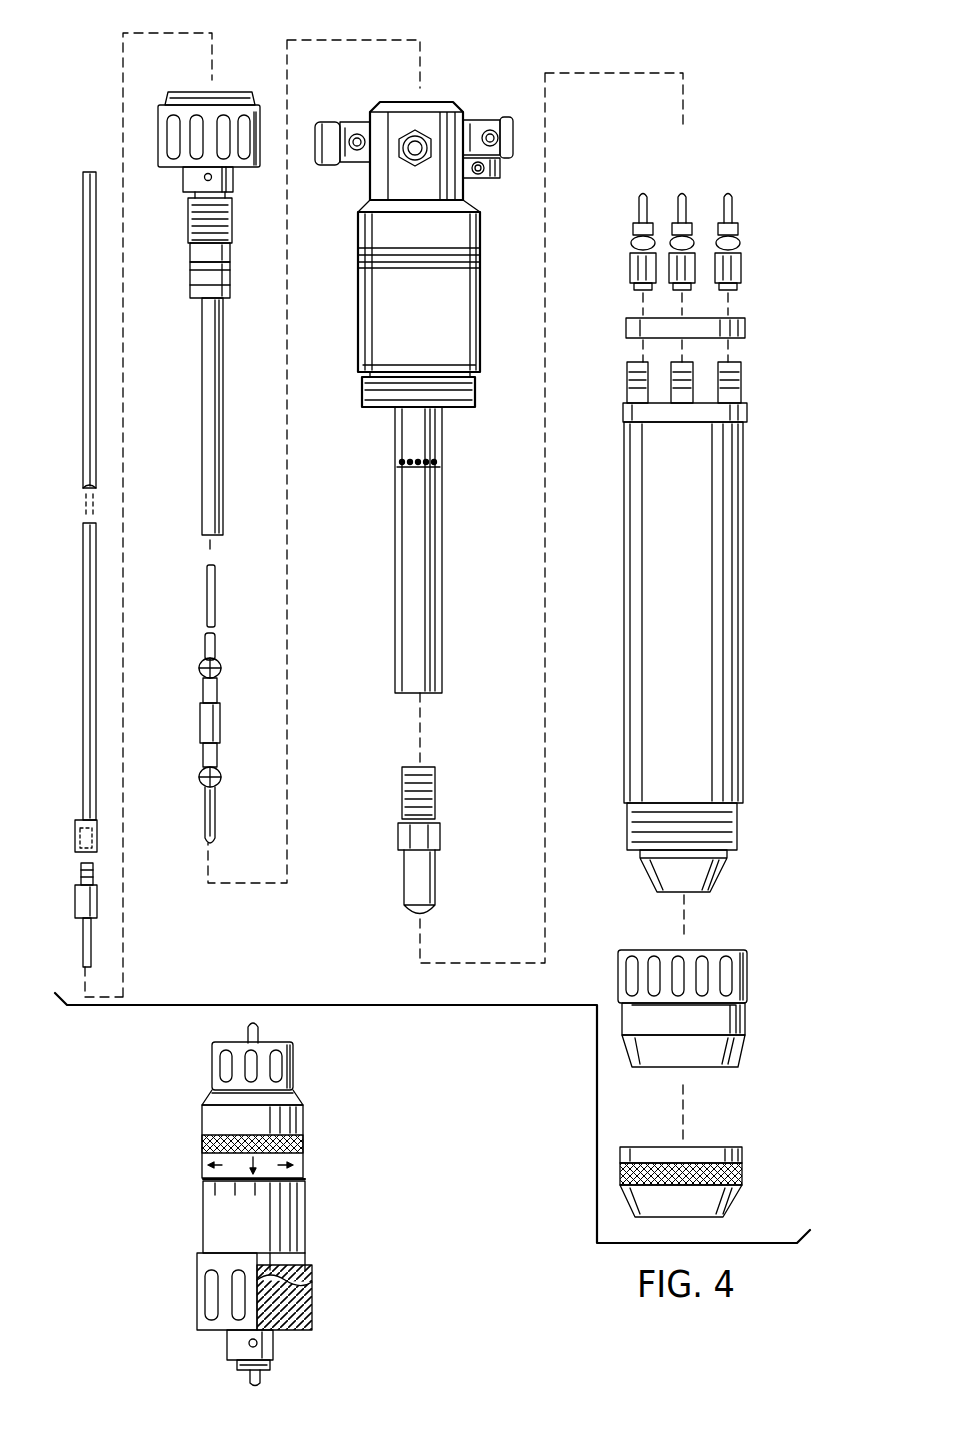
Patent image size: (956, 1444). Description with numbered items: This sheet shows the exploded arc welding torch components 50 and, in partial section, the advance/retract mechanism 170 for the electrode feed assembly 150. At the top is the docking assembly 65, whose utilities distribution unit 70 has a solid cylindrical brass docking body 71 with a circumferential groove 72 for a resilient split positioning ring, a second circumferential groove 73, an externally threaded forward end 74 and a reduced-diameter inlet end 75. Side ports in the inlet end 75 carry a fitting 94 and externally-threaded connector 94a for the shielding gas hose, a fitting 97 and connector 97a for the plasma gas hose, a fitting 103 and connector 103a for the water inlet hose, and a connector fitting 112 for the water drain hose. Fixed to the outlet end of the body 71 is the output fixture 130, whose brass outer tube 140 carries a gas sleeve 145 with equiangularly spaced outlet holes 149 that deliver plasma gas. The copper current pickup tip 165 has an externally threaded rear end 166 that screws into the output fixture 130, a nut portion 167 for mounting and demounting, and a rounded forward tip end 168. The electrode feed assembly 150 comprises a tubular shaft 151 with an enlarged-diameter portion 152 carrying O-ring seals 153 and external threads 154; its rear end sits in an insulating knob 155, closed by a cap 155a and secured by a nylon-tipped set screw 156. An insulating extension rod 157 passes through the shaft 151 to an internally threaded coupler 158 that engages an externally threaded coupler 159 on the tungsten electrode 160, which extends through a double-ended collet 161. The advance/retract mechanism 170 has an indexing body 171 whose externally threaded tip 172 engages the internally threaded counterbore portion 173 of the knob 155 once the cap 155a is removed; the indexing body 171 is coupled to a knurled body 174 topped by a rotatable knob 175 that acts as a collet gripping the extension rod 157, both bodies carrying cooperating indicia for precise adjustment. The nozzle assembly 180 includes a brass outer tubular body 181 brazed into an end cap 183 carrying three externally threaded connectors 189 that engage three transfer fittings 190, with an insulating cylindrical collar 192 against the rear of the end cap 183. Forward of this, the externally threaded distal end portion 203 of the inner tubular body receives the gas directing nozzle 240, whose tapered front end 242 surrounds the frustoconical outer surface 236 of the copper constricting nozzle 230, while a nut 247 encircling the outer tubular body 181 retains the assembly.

In FIG. 5, the fluid delivery assembly 50 is at (502, 43).
In FIG. 5, the docking assembly 65 is at (485, 384).
In FIG. 5, the utilities distribution unit 70 is at (444, 90).
In FIG. 5, the docking body 71 is at (360, 324).
In FIG. 5, the circumferential groove 72 is at (358, 268).
In FIG. 5, the circumferential groove 73 is at (358, 255).
In FIG. 5, the externally threaded forward end 74 is at (457, 402).
In FIG. 5, the reduced-diameter inlet end 75 is at (380, 184).
In FIG. 5, the fitting 94 is at (493, 170).
In FIG. 5, the externally-threaded connector 94a is at (480, 178).
In FIG. 5, the fitting 97 is at (471, 124).
In FIG. 5, the externally-threaded connector 97a is at (495, 122).
In FIG. 5, the fitting 103 is at (345, 125).
In FIG. 5, the externally-threaded connector 103a is at (347, 126).
In FIG. 5, the connector fitting 112 is at (414, 134).
In FIG. 5, the output fixture 130 is at (456, 547).
In FIG. 5, the outer tube 140 is at (405, 573).
In FIG. 5, the gas sleeve 145 is at (405, 441).
In FIG. 5, the outlet holes 149 is at (418, 467).
In FIG. 5, the electrode feed assembly 150 is at (113, 118).
In FIG. 5, the tubular shaft 151 is at (203, 392).
In FIG. 5, the enlarged-diameter portion 152 is at (203, 250).
In FIG. 5, the O-ring seals 153 is at (203, 276).
In FIG. 5, the external threads 154 is at (198, 222).
In FIG. 5, the knob 155 is at (238, 168).
In FIG. 5, the cap 155a is at (250, 97).
In FIG. 5, the set screw 156 is at (203, 177).
In FIG. 5, the extension rod 157 is at (84, 393).
In FIG. 5, the internally threaded coupler 158 is at (75, 836).
In FIG. 5, the externally threaded coupler 159 is at (81, 876).
In FIG. 5, the electrode 160 is at (83, 938).
In FIG. 5, the double-ended collet 161 is at (200, 713).
In FIG. 5, the current pickup tip 165 is at (451, 852).
In FIG. 5, the externally threaded rear end 166 is at (402, 789).
In FIG. 5, the nut portion 167 is at (398, 836).
In FIG. 5, the rounded forward tip end 168 is at (405, 876).
In FIG. 5, the advance/retract mechanism 170 is at (342, 1157).
In FIG. 5, the indexing body 171 is at (205, 1224).
In FIG. 5, the externally threaded tip 172 is at (278, 1285).
In FIG. 5, the internally threaded counterbore portion 173 is at (272, 1306).
In FIG. 5, the knurled body 174 is at (205, 1125).
In FIG. 5, the rotatable knob 175 is at (293, 1064).
In FIG. 4, the nozzle assembly 180 is at (757, 520).
In FIG. 4, the outer tubular body 181 is at (630, 597).
In FIG. 4, the end cap 183 is at (627, 413).
In FIG. 4, the externally threaded connectors 189 is at (672, 365).
In FIG. 4, the transfer fittings 190 is at (728, 194).
In FIG. 4, the cylindrical collar 192 is at (745, 326).
In FIG. 4, the externally threaded distal end portion 203 is at (730, 830).
In FIG. 4, the constricting nozzle 230 is at (736, 879).
In FIG. 4, the frustoconical outer surface 236 is at (640, 869).
In FIG. 4, the gas directing nozzle 240 is at (757, 1165).
In FIG. 4, the tapered front end 242 is at (737, 1192).
In FIG. 4, the nut 247 is at (735, 1020).